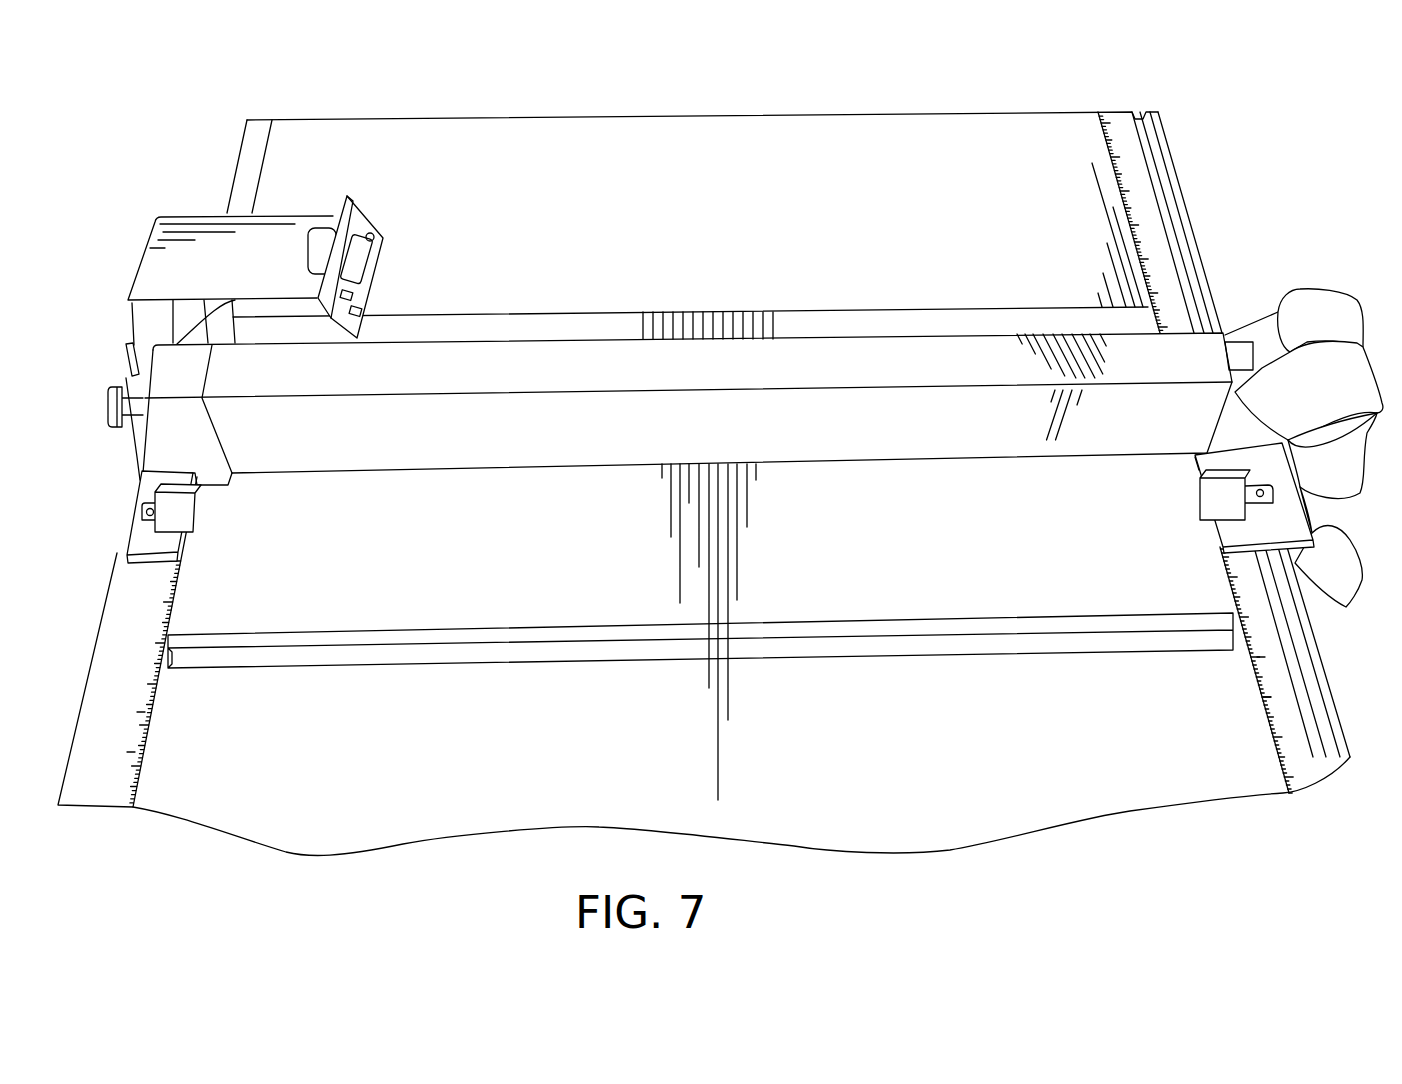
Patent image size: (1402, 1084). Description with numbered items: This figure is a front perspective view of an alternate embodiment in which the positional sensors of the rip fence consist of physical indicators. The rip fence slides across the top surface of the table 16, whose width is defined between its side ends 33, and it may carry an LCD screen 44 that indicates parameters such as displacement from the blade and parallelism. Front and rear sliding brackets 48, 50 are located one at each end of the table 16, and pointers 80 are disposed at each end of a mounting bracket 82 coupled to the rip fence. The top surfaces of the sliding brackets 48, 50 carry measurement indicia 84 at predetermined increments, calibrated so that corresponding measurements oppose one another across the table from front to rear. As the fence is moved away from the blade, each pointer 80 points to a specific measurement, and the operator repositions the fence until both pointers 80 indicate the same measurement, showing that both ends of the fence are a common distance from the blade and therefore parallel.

The table 16 is at (1018, 150).
The side ends 33 is at (380, 118).
The LCD screen 44 is at (355, 258).
The front sliding bracket 48 is at (1160, 207).
The rear sliding bracket 50 is at (113, 662).
The pointers 80 is at (177, 505).
The mounting bracket 82 is at (140, 543).
The measurement indicia 84 is at (135, 752).